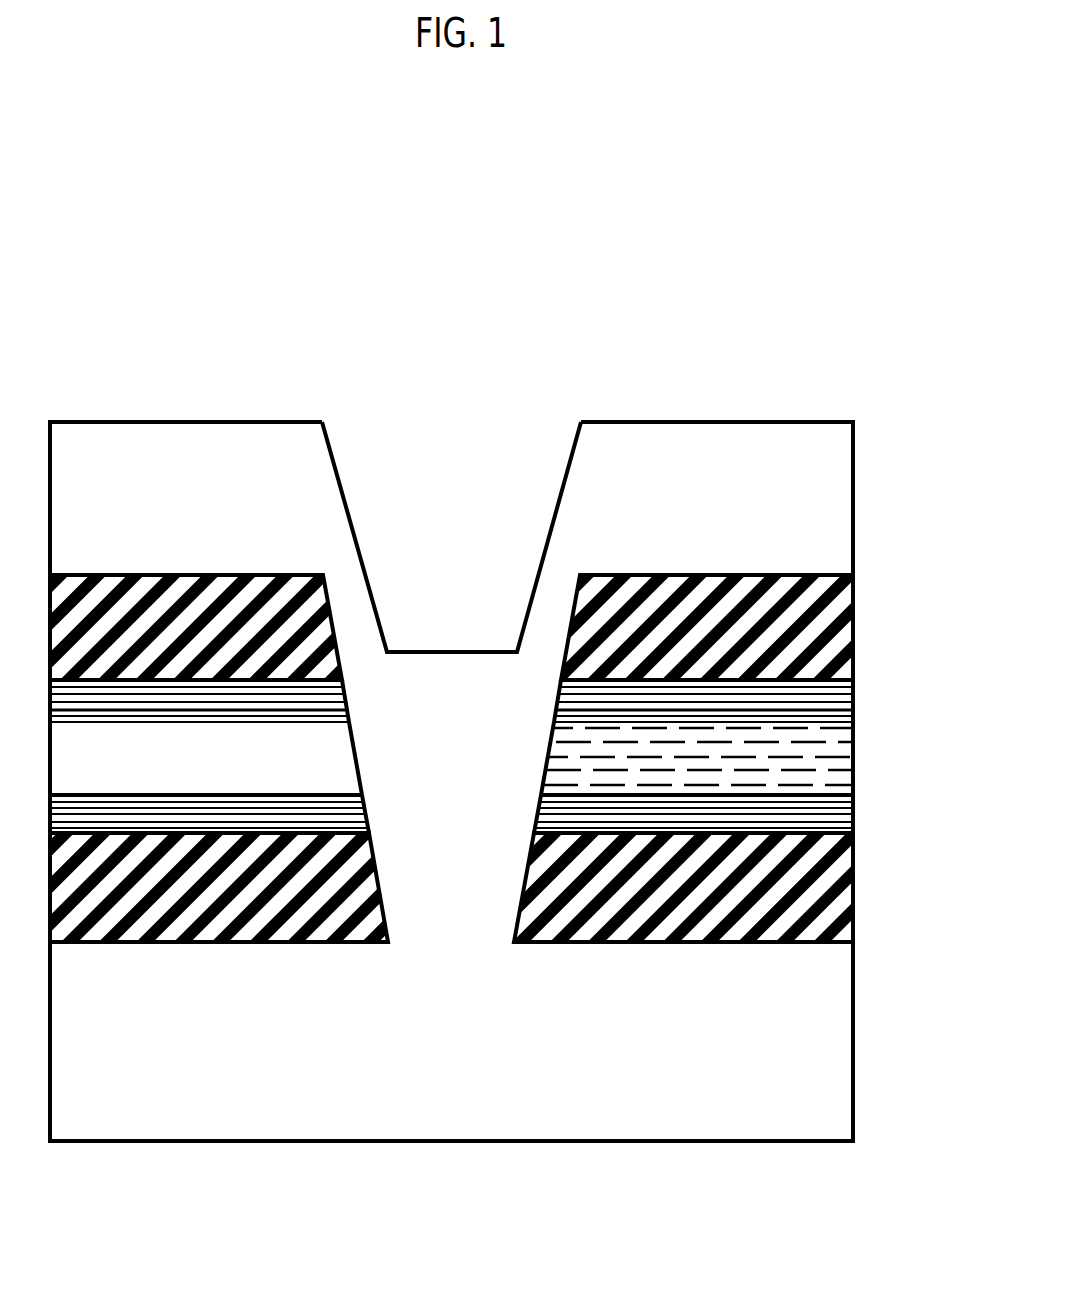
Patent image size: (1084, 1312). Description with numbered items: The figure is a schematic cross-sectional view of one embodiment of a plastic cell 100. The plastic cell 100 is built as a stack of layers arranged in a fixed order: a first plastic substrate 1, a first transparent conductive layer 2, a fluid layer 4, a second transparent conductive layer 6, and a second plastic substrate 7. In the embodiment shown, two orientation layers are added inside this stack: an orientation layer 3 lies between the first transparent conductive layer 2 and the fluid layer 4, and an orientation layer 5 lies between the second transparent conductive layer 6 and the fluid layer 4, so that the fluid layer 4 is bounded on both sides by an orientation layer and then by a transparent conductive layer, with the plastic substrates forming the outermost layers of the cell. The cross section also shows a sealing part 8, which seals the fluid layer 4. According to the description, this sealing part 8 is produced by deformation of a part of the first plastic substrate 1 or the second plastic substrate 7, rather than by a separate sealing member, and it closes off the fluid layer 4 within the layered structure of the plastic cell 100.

The plastic cell 100 is at (788, 340).
The first plastic substrate 1 is at (855, 523).
The first transparent conductive layer 2 is at (855, 615).
The orientation layer 3 is at (855, 697).
The fluid layer 4 is at (855, 761).
The orientation layer 5 is at (855, 816).
The second transparent conductive layer 6 is at (855, 879).
The second plastic substrate 7 is at (855, 1040).
The sealing part 8 is at (447, 792).